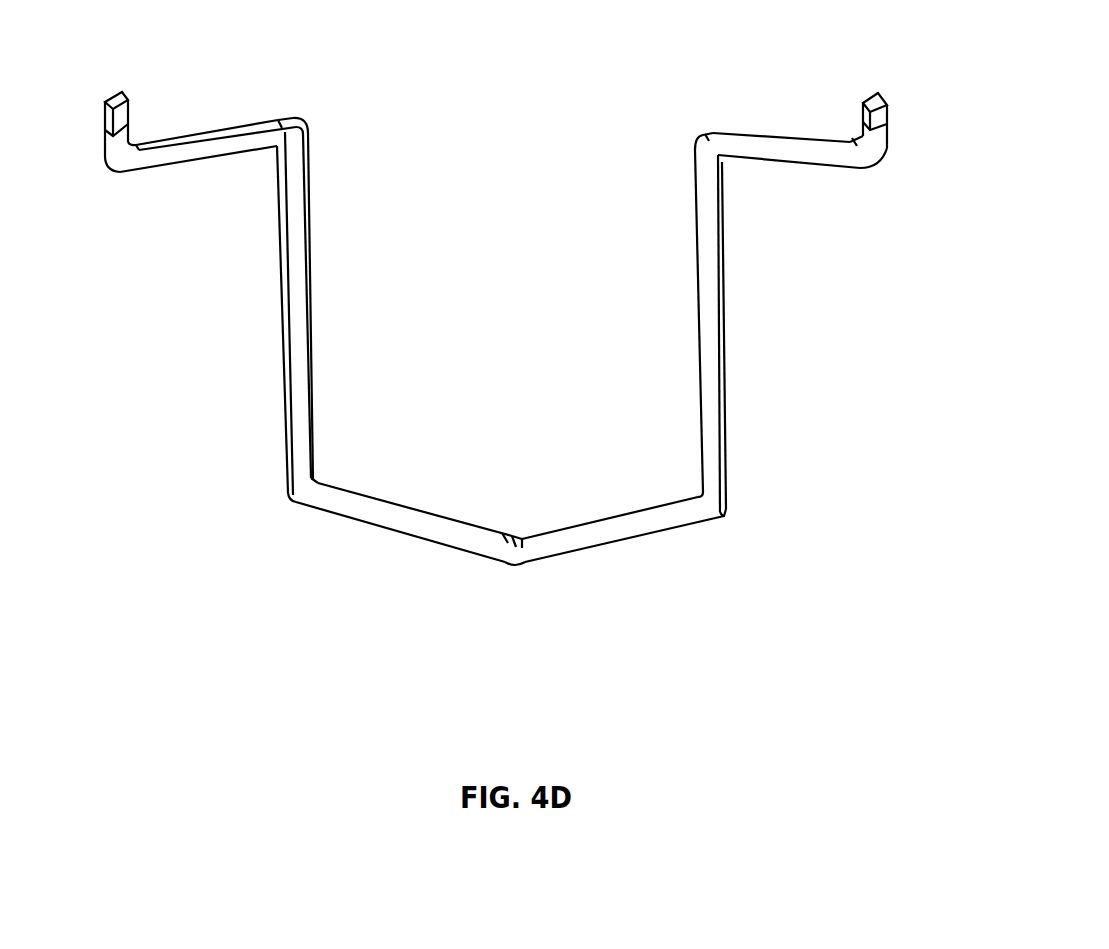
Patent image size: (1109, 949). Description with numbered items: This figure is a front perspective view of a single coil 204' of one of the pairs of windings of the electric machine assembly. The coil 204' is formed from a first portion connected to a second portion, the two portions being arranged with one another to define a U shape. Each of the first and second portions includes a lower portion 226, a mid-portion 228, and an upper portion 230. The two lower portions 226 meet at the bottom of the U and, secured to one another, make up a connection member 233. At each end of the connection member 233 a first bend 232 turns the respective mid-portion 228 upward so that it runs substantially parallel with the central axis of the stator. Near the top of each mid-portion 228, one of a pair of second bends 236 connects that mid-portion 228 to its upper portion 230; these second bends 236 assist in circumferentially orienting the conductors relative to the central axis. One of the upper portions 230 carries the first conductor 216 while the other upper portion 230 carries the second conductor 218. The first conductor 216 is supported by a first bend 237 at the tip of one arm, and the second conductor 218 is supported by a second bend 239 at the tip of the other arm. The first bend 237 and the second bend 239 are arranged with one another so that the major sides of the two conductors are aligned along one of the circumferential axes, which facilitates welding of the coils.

The coil 204' is at (502, 351).
The first conductor 216 is at (881, 87).
The second conductor 218 is at (100, 106).
The lower portion 226 is at (733, 523).
The mid-portion 228 is at (320, 126).
The upper portion 230 is at (105, 90).
The first bend 232 is at (291, 506).
The connection member 233 is at (510, 585).
The second bend 236 is at (301, 109).
The first bend 237 is at (865, 179).
The second bend 239 is at (119, 178).